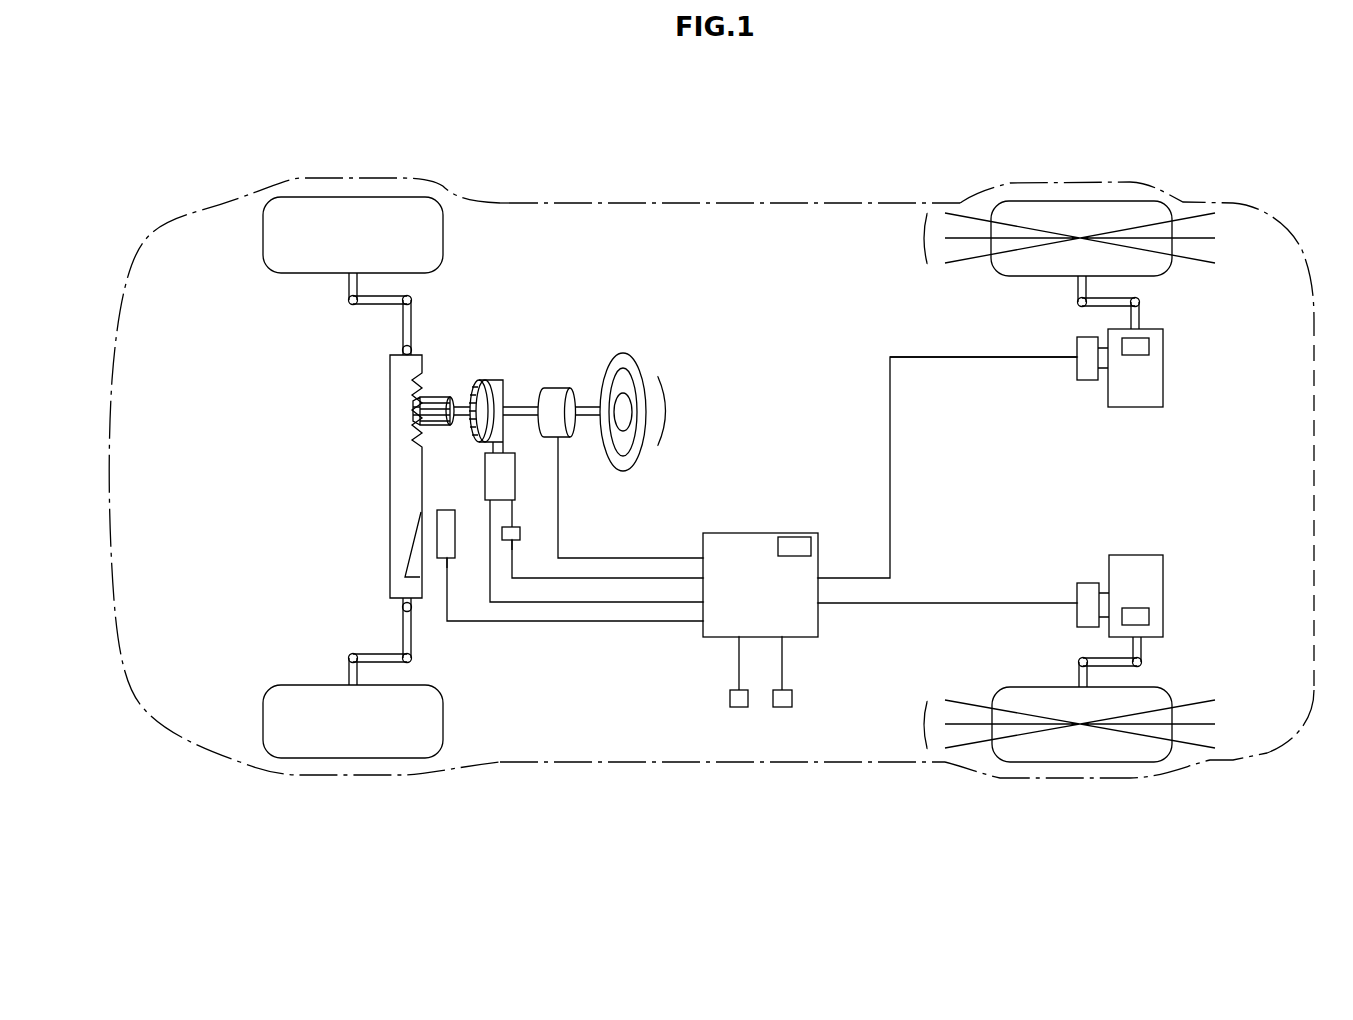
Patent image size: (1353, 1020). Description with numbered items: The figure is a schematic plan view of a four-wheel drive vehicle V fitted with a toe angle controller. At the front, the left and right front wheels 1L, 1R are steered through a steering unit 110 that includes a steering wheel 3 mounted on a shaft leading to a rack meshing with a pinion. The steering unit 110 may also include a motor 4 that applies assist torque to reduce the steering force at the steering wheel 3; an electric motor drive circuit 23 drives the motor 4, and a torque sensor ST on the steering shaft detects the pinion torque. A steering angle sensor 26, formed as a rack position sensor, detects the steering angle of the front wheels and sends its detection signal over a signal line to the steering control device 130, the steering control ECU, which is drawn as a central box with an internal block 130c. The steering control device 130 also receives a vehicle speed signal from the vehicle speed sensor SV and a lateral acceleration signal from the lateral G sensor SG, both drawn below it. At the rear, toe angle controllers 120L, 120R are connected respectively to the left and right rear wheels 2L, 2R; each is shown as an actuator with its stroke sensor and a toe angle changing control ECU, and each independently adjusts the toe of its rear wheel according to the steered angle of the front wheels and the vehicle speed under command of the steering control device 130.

The vehicle V is at (210, 125).
The front right wheel 1R is at (367, 197).
The front left wheel 1L is at (368, 758).
The rear right wheel 2R is at (1108, 201).
The rear left wheel 2L is at (1112, 762).
The front wheel steering device 110 is at (485, 368).
The steering torque sensor ST is at (558, 388).
The steering wheel 3 is at (643, 380).
The steering assist motor 4 is at (483, 462).
The motor rotation angle sensor 23 is at (520, 533).
The steering angle sensor 26 is at (455, 543).
The electronic control unit 130 is at (890, 497).
The memory of control unit 130c is at (795, 537).
The rear right wheel toe angle changing device 120R is at (1145, 394).
The rear left wheel toe angle changing device 120L is at (1145, 574).
The yaw rate sensor signal SG is at (740, 707).
The vehicle speed sensor signal SV is at (782, 707).